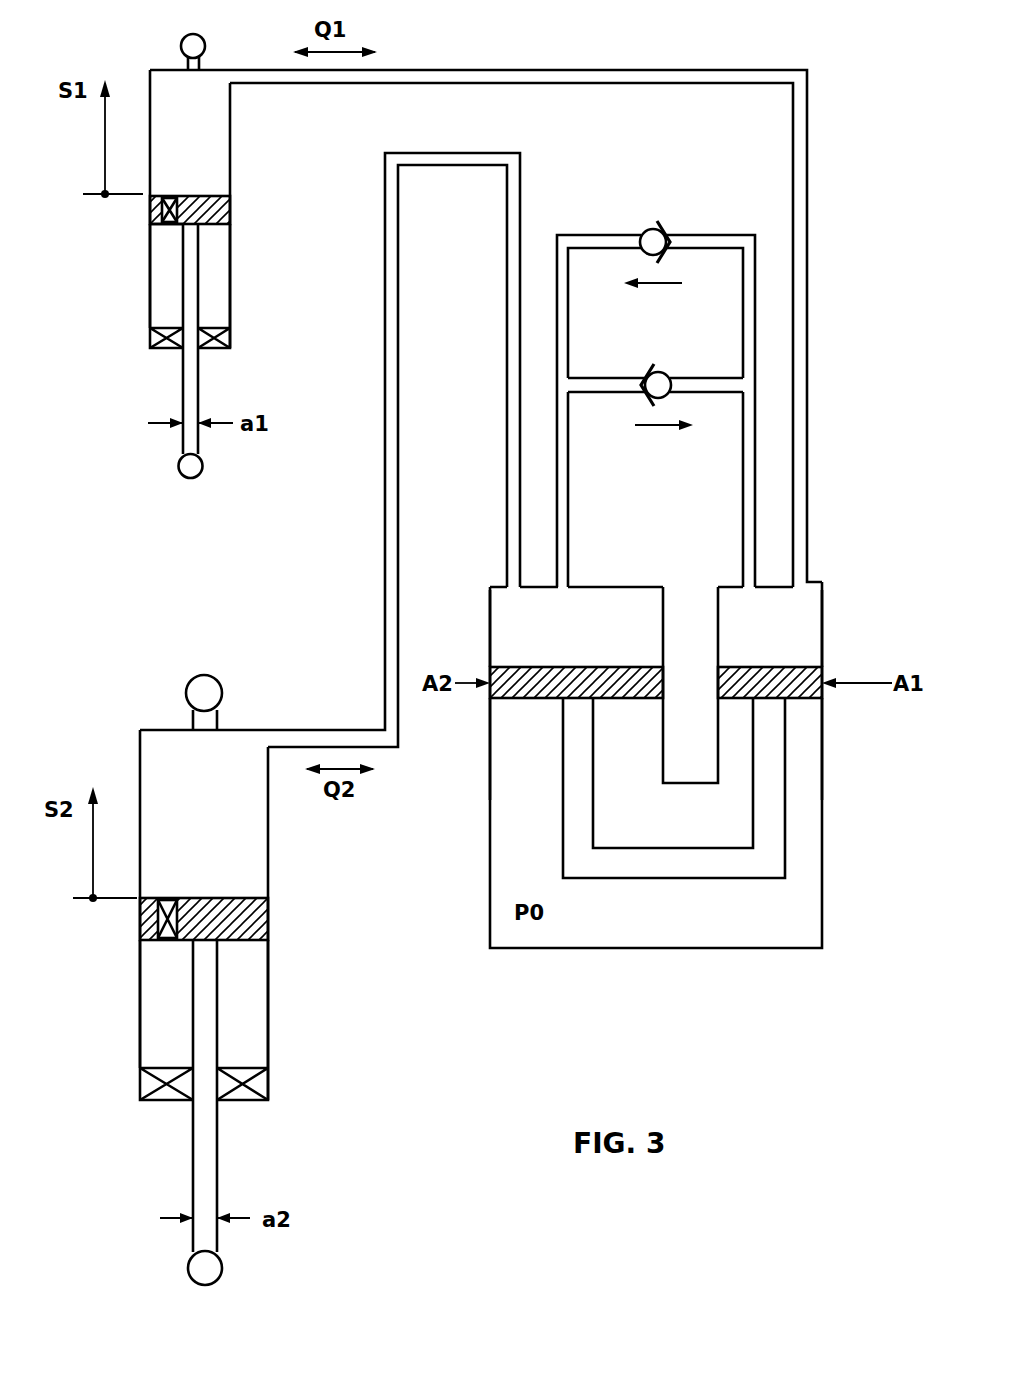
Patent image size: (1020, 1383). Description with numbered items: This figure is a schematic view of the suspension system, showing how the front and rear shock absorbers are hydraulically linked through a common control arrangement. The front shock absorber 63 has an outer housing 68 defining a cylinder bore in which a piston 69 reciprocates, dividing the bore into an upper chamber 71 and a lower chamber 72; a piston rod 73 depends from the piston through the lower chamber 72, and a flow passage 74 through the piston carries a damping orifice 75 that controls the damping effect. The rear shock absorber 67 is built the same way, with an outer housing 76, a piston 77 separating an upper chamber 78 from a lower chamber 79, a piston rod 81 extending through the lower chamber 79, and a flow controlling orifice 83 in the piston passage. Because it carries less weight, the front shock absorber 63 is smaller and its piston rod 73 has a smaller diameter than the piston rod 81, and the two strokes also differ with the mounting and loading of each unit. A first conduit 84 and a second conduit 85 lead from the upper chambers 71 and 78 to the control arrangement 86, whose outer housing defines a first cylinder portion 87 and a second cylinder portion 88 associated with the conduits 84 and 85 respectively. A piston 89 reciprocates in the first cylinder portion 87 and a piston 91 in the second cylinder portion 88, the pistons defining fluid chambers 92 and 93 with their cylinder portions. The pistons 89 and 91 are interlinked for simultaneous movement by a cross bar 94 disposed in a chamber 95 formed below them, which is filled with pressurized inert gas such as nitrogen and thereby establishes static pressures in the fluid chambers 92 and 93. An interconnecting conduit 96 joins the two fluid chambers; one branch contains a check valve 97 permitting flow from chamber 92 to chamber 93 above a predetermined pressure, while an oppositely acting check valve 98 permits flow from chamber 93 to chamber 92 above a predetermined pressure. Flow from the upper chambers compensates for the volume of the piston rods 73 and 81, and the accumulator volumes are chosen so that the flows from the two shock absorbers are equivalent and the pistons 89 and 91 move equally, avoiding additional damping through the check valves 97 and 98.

The front shock absorber 63 is at (232, 168).
The rear shock absorber 67 is at (280, 860).
The outer housing 68 is at (230, 285).
The piston 69 is at (209, 198).
The upper chamber 71 is at (202, 113).
The lower chamber 72 is at (150, 304).
The piston rod 73 is at (183, 380).
The flow passage 74 is at (165, 230).
The damping orifice 75 is at (169, 198).
The outer housing 76 is at (268, 990).
The piston 77 is at (237, 900).
The upper chamber 78 is at (211, 809).
The lower chamber 79 is at (251, 1028).
The piston rod 81 is at (217, 1150).
The flow controlling orifice 83 is at (168, 962).
The first conduit 84 is at (656, 70).
The second conduit 85 is at (385, 537).
The control arrangement 86 is at (826, 582).
The first cylinder portion 87 is at (822, 630).
The second cylinder portion 88 is at (490, 632).
The piston 89 is at (814, 700).
The piston 91 is at (524, 698).
The fluid chamber 92 is at (811, 650).
The fluid chamber 93 is at (651, 593).
The cross bar 94 is at (676, 878).
The chamber 95 is at (781, 929).
The interconnecting conduit 96 is at (736, 235).
The check valve 97 is at (645, 230).
The check valve 98 is at (668, 375).